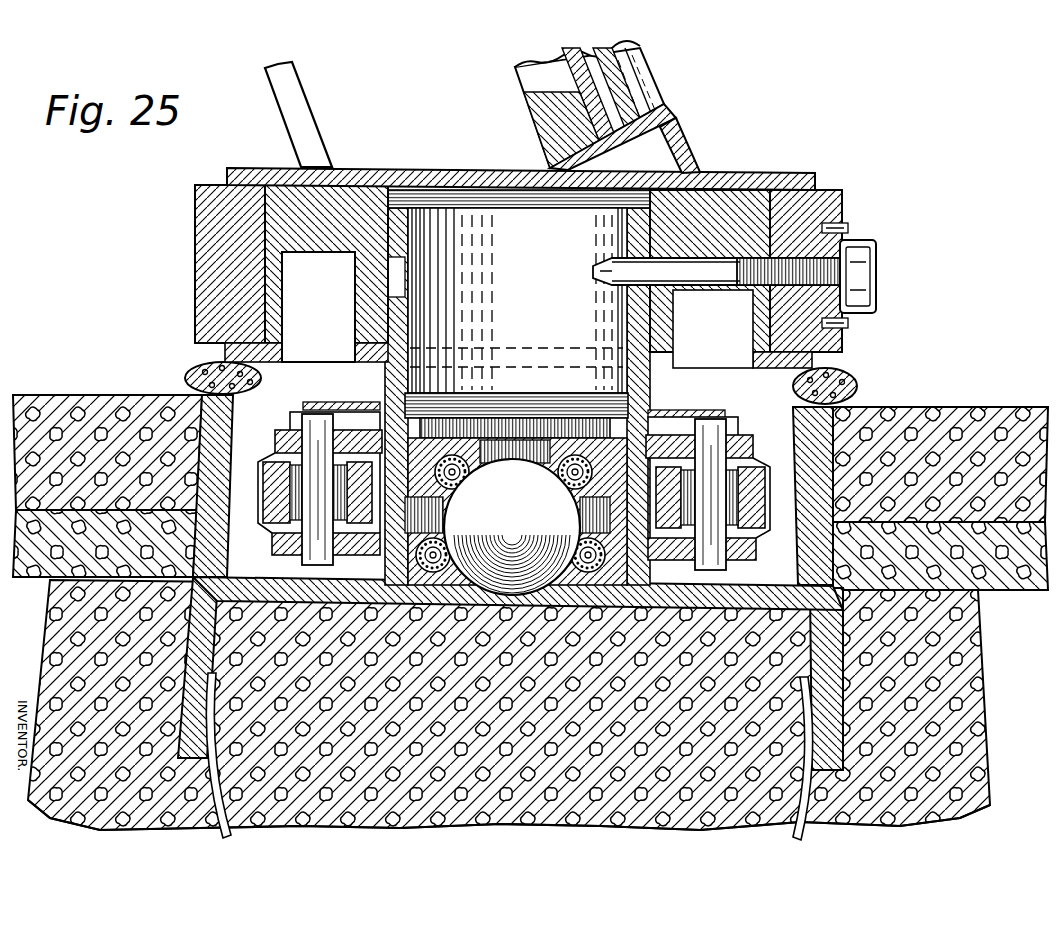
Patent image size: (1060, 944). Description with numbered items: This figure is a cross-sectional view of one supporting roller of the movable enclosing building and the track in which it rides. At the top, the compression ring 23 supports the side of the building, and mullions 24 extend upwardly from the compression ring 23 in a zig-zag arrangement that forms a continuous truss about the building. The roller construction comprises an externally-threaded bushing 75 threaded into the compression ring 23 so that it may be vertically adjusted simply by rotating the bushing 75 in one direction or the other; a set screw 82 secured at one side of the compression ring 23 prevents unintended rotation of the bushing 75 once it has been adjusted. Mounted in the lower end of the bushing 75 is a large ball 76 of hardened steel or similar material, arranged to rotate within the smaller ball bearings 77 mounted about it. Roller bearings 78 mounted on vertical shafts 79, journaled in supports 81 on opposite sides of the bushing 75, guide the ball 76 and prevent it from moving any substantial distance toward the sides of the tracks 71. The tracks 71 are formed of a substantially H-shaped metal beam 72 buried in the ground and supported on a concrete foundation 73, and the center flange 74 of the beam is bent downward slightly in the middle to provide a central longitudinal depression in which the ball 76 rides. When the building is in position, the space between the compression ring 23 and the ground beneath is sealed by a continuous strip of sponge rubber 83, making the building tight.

The compression ring 23 is at (758, 182).
The mullions 24 is at (380, 80).
The tracks 71 is at (735, 572).
The H-shaped metal beam 72 is at (793, 572).
The concrete foundation 73 is at (672, 822).
The center flange 74 is at (455, 612).
The externally-threaded bushing 75 is at (393, 220).
The ball 76 is at (393, 557).
The ball bearings 77 is at (592, 572).
The roller bearings 78 is at (273, 553).
The vertical shafts 79 is at (277, 445).
The supports 81 is at (280, 430).
The set screw 82 is at (847, 223).
The strip of sponge rubber 83 is at (192, 373).